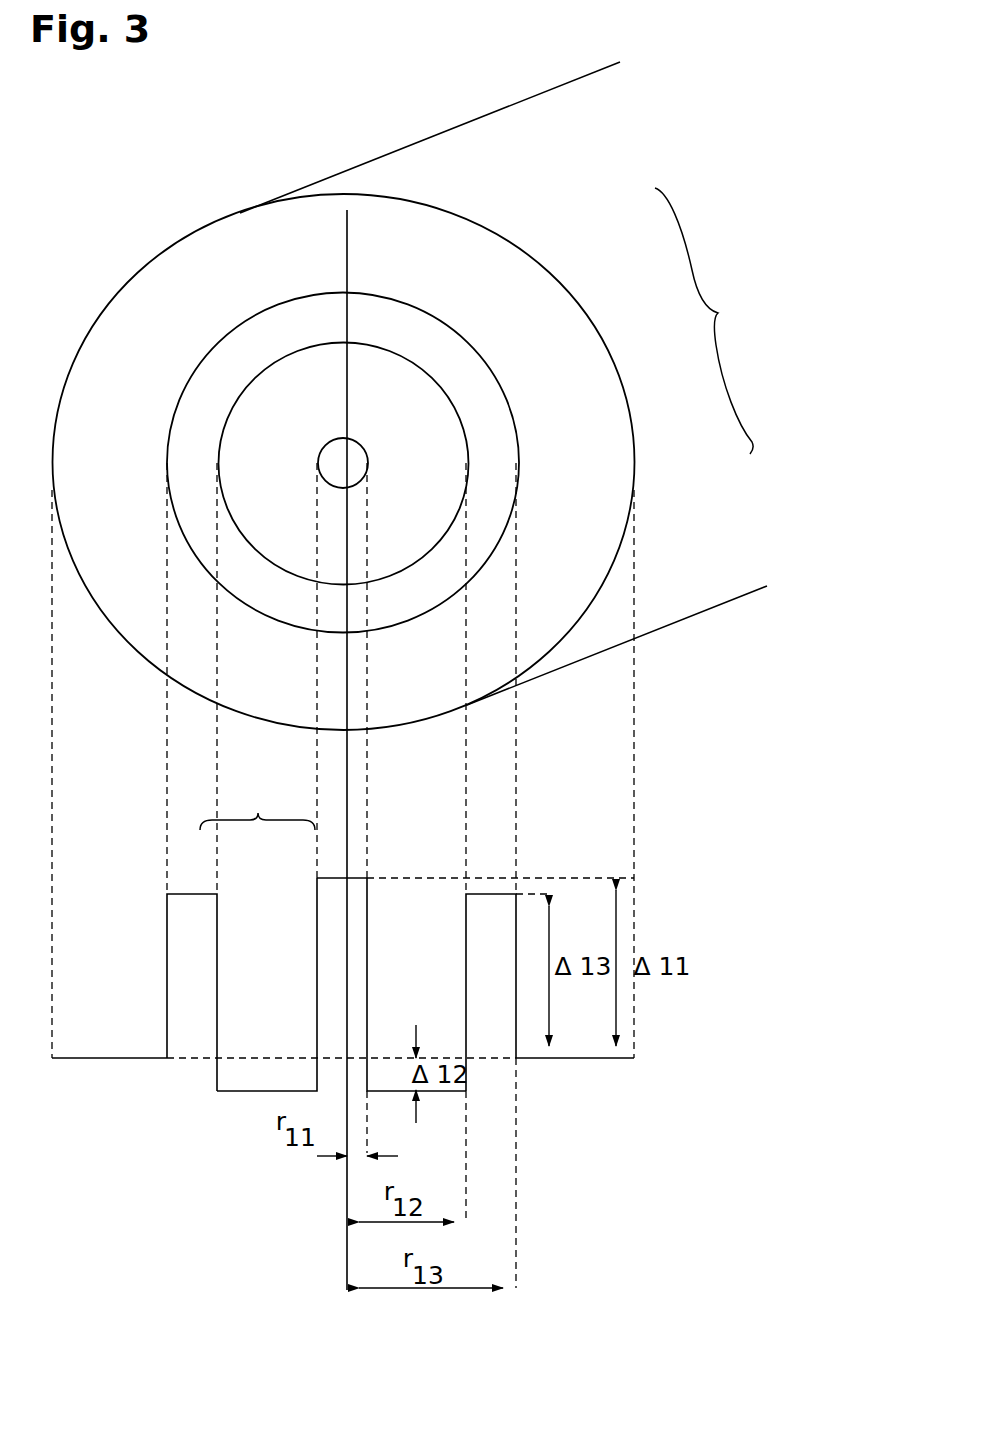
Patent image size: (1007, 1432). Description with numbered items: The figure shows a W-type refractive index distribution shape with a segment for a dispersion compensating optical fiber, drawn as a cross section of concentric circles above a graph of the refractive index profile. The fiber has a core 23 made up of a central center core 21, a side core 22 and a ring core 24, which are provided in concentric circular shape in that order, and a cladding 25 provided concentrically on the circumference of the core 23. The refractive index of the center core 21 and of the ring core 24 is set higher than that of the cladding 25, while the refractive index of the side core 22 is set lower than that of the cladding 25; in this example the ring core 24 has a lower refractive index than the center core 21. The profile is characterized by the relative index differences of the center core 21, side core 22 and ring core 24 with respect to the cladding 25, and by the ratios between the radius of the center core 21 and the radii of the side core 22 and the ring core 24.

The center core 21 is at (350, 453).
The side core 22 is at (418, 438).
The core 23 is at (489, 509).
The ring core 24 is at (484, 438).
The cladding 25 is at (568, 472).